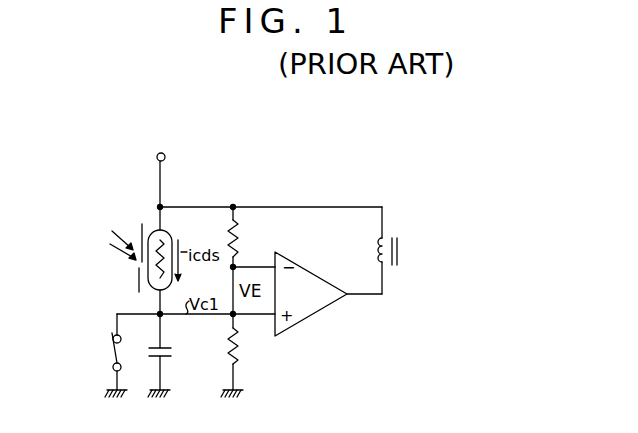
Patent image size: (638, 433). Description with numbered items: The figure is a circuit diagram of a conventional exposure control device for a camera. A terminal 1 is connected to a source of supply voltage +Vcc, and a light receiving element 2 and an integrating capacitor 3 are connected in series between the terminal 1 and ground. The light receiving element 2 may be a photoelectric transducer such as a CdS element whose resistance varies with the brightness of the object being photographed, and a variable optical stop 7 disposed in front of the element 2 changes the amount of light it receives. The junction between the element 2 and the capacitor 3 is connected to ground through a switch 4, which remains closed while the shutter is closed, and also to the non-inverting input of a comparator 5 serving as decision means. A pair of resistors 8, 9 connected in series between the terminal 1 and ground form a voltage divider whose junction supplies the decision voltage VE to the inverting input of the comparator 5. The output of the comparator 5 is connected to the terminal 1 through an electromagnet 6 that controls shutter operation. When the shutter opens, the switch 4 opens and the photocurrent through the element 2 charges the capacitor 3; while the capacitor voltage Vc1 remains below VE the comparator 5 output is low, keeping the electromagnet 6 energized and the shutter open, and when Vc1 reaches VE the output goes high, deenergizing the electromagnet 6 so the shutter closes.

The terminal 1 is at (157, 157).
The light receiving element 2 is at (165, 250).
The integrating capacitor 3 is at (172, 354).
The switch 4 is at (112, 343).
The comparator 5 is at (311, 279).
The electromagnet 6 is at (379, 249).
The variable optical stop 7 is at (142, 233).
The resistor 8 is at (239, 238).
The resistor 9 is at (239, 353).